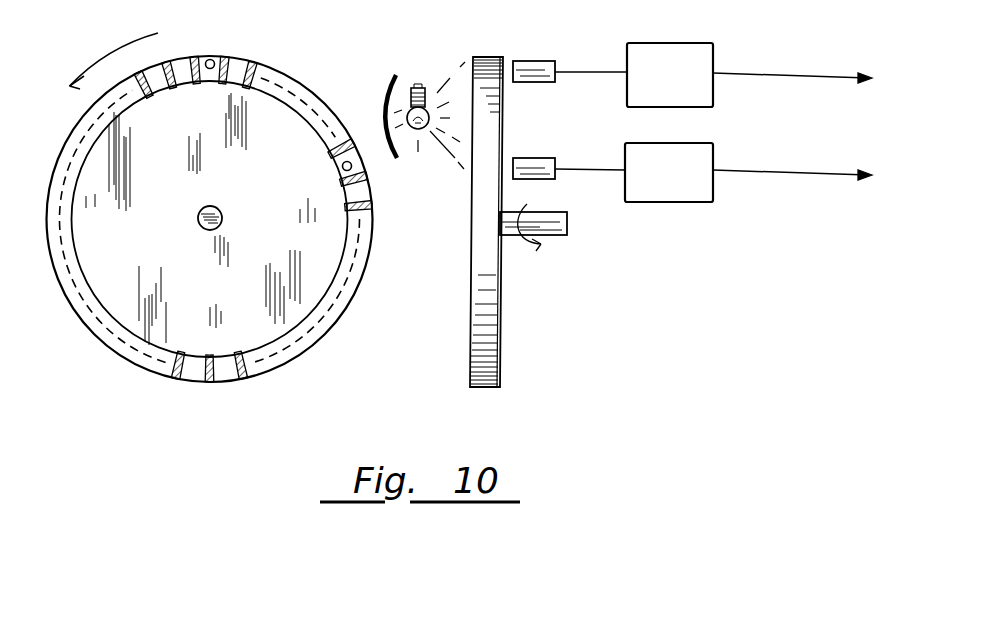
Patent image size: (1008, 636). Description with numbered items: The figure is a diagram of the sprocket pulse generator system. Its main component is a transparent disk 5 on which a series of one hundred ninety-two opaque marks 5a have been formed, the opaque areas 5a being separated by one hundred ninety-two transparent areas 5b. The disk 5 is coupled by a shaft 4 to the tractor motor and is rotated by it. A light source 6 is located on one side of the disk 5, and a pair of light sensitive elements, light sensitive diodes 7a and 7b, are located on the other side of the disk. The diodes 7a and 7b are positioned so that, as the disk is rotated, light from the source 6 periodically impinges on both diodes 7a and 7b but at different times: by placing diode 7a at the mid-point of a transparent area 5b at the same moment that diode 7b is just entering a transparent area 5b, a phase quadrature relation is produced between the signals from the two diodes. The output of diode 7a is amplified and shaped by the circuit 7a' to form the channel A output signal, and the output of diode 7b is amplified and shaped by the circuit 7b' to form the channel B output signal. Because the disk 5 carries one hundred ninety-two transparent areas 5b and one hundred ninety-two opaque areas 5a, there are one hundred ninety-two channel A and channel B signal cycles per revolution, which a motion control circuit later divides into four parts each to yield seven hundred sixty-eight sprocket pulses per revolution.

The shaft 4 is at (200, 210).
The transparent disk 5 is at (270, 62).
The opaque marks 5a is at (242, 381).
The transparent areas 5b is at (193, 383).
The light source 6 is at (412, 73).
The light sensitive diode 7a is at (417, 55).
The light sensitive diode 7b is at (451, 159).
The amplifier and shaper circuit 7a' is at (749, 59).
The amplifier and shaper circuit 7b' is at (748, 190).